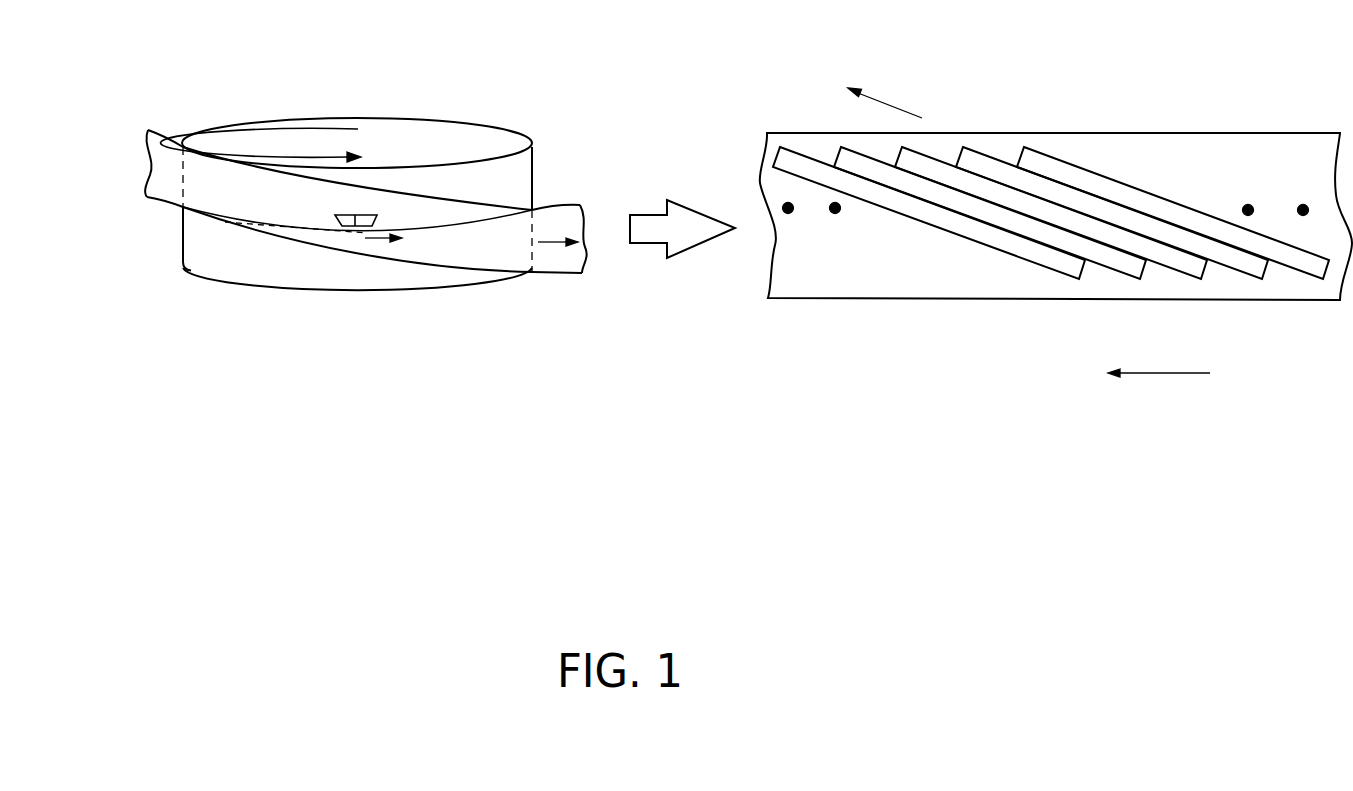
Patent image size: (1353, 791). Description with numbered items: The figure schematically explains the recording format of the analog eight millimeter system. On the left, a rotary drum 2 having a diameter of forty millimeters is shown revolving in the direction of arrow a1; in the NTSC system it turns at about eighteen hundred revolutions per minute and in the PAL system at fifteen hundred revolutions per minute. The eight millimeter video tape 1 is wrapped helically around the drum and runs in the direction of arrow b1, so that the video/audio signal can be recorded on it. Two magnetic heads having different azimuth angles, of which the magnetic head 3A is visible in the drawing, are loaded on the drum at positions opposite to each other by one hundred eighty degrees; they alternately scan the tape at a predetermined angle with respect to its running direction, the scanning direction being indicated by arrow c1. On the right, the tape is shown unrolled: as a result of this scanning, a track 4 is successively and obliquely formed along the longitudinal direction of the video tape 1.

The 8 mm video tape 1 is at (158, 162).
The rotary drum 2 is at (438, 132).
The magnetic head 3A is at (343, 228).
The track 4 is at (270, 228).
The rotation direction arrow a1 is at (273, 128).
The tape running direction arrow b1 is at (553, 233).
The head scanning direction c1 is at (373, 253).